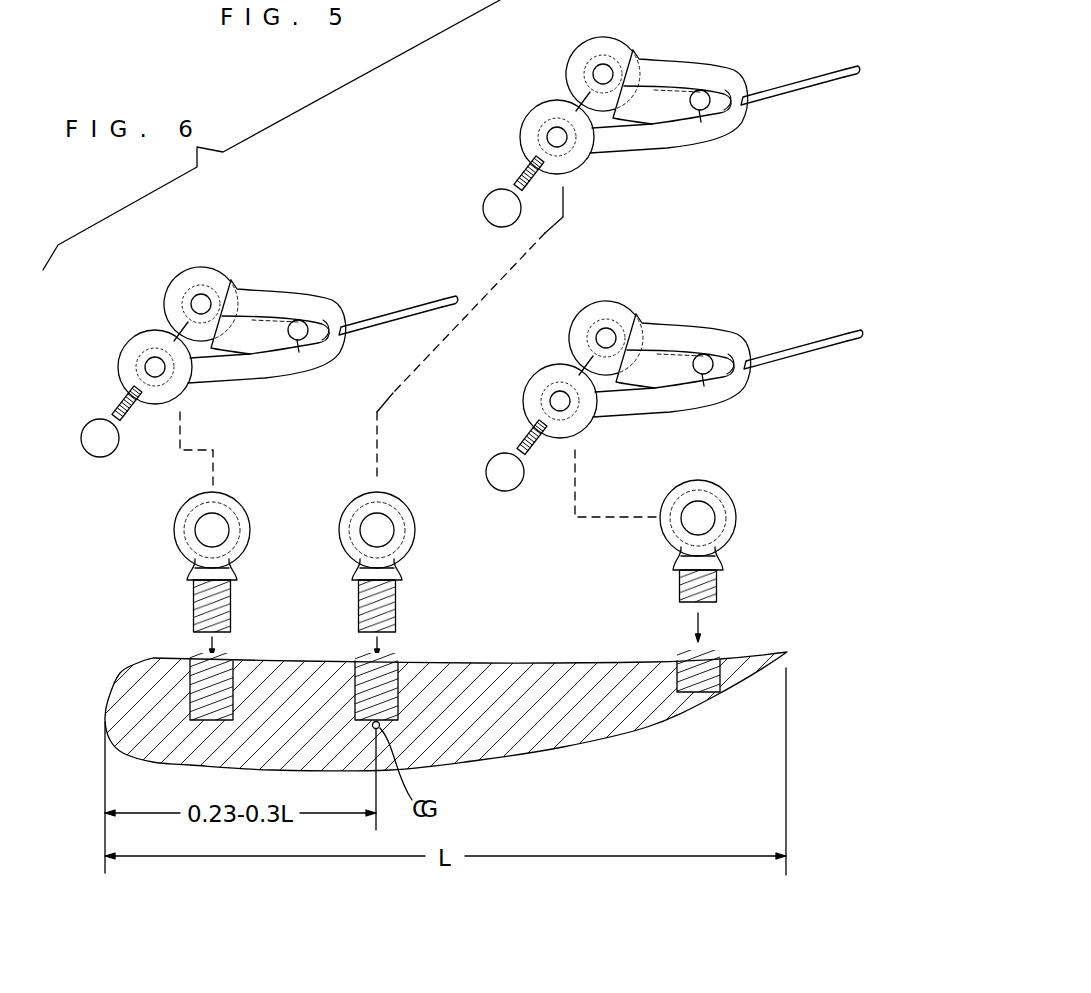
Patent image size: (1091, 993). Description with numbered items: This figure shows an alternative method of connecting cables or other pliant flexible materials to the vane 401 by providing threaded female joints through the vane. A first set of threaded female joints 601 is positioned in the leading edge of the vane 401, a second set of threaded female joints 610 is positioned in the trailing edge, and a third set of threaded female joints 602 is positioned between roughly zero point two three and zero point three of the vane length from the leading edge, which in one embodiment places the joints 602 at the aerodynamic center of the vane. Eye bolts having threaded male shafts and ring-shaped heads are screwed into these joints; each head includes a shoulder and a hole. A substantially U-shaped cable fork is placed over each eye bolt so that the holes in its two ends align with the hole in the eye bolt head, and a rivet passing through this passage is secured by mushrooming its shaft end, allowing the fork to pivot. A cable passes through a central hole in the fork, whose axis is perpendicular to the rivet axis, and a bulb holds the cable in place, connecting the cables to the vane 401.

The vane 401 is at (440, 708).
The first set of threaded female joints 601 is at (200, 668).
The third set of threaded female joints 602 is at (390, 672).
The second set of threaded female joints 610 is at (697, 677).